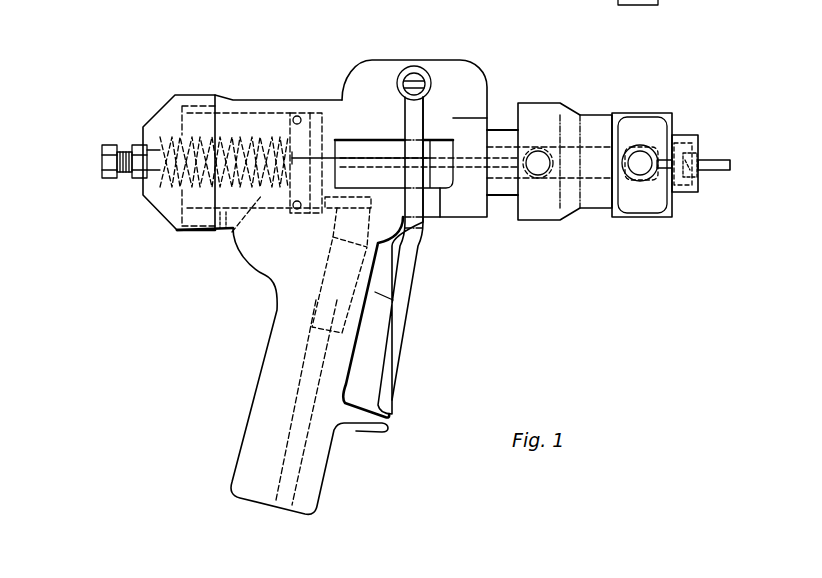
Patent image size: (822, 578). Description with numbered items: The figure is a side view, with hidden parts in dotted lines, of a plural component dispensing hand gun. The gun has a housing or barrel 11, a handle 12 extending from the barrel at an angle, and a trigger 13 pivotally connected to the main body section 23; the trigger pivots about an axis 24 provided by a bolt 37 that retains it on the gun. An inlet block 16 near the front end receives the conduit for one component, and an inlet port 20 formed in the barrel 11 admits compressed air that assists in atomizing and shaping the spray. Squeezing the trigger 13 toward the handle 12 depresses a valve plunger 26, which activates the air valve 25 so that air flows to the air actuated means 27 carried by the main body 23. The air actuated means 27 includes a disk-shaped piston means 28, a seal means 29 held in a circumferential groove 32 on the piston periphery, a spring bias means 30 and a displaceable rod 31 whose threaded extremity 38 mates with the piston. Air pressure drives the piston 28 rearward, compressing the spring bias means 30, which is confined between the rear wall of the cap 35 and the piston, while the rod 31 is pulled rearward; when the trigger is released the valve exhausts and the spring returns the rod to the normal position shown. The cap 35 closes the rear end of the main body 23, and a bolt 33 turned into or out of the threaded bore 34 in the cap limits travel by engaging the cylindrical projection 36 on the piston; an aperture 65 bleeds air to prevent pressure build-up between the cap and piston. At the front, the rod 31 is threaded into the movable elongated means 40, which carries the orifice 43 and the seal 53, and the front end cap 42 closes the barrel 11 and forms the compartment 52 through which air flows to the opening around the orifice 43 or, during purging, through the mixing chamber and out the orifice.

The barrel 11 is at (547, 103).
The handle 12 is at (257, 383).
The trigger 13 is at (393, 355).
The inlet block 16 is at (642, 152).
The inlet port 20 is at (548, 157).
The main body section 23 is at (463, 62).
The axis 24 is at (417, 67).
The air valve 25 is at (320, 280).
The valve plunger 26 is at (378, 287).
The air actuated means 27 is at (252, 135).
The piston means 28 is at (300, 157).
The seal means 29 is at (298, 116).
The spring bias means 30 is at (240, 130).
The displaceable rod 31 is at (357, 157).
The circumferential groove 32 is at (275, 197).
The bolt 33 is at (102, 157).
The threaded bore 34 is at (147, 113).
The rear cap 35 is at (167, 100).
The cylindrical projection 36 is at (228, 237).
The bolt 37 is at (427, 72).
The extremity of displaceable rod 38 is at (337, 97).
The movable elongated means 40 is at (708, 160).
The front end cap 42 is at (690, 133).
The orifice 43 is at (730, 165).
The compartment 52 is at (685, 188).
The seal 53 is at (703, 180).
The aperture 65 is at (230, 235).